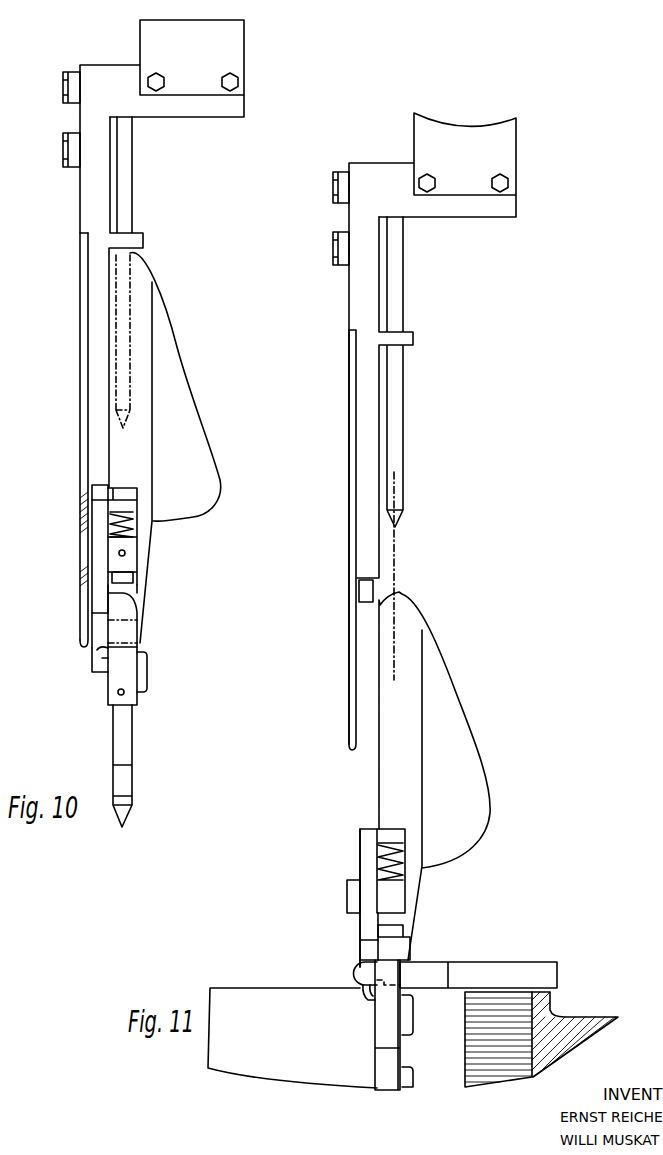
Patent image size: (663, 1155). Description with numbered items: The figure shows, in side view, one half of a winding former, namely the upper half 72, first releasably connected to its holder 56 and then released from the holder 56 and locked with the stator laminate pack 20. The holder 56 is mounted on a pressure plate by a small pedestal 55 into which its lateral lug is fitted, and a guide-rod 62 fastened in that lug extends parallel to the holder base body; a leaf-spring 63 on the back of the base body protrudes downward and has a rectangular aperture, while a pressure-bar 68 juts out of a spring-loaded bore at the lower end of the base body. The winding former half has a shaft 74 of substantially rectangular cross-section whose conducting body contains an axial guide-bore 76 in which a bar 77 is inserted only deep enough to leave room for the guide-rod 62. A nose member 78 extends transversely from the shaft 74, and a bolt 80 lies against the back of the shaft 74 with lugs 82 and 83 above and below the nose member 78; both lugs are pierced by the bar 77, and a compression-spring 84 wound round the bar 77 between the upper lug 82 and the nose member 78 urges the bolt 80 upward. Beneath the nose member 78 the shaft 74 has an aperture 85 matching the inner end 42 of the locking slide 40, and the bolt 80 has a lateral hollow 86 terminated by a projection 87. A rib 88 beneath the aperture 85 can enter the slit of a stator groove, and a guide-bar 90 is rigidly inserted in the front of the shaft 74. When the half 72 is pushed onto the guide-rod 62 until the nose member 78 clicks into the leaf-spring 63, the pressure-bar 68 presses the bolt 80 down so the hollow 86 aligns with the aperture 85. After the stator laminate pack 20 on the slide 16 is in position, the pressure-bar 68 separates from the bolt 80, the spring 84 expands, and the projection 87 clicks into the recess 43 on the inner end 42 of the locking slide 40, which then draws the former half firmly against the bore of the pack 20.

In FIG. 11, the slide 16 is at (585, 1023).
In FIG. 11, the stator laminate pack 20 is at (505, 1003).
In FIG. 11, the locking slide 40 is at (552, 977).
In FIG. 11, the inner end 42 is at (355, 977).
In FIG. 11, the recess 43 is at (360, 998).
In FIG. 10, the small pedestal 55 is at (233, 50).
In FIG. 11, the small pedestal 55 is at (507, 148).
In FIG. 10, the holder 56 is at (70, 268).
In FIG. 11, the holder 56 is at (346, 318).
In FIG. 10, the guide-rod 62 is at (125, 192).
In FIG. 11, the guide-rod 62 is at (398, 373).
In FIG. 10, the leaf-spring 63 is at (80, 447).
In FIG. 11, the leaf-spring 63 is at (353, 408).
In FIG. 10, the pressure-bar 68 is at (97, 492).
In FIG. 11, the pressure-bar 68 is at (362, 593).
In FIG. 10, the upper half of the winding former 72 is at (186, 351).
In FIG. 11, the upper half of the winding former 72 is at (460, 723).
In FIG. 10, the shaft 74 is at (115, 682).
In FIG. 11, the shaft 74 is at (383, 1037).
In FIG. 10, the guide-bore 76 is at (118, 376).
In FIG. 10, the bar 77 is at (133, 576).
In FIG. 11, the bar 77 is at (405, 935).
In FIG. 11, the nose member 78 is at (353, 897).
In FIG. 10, the bolt 80 is at (100, 514).
In FIG. 11, the bolt 80 is at (367, 853).
In FIG. 10, the upper lug 82 is at (130, 505).
In FIG. 11, the upper lug 82 is at (393, 837).
In FIG. 10, the lower lug 83 is at (123, 595).
In FIG. 11, the lower lug 83 is at (382, 918).
In FIG. 10, the compression-spring 84 is at (132, 535).
In FIG. 11, the compression-spring 84 is at (397, 878).
In FIG. 10, the aperture 85 is at (127, 635).
In FIG. 10, the lateral hollow 86 is at (100, 629).
In FIG. 11, the lateral hollow 86 is at (367, 950).
In FIG. 10, the projection 87 is at (100, 665).
In FIG. 11, the projection 87 is at (373, 998).
In FIG. 10, the rib 88 is at (147, 675).
In FIG. 11, the rib 88 is at (413, 1010).
In FIG. 10, the guide-bar 90 is at (120, 733).